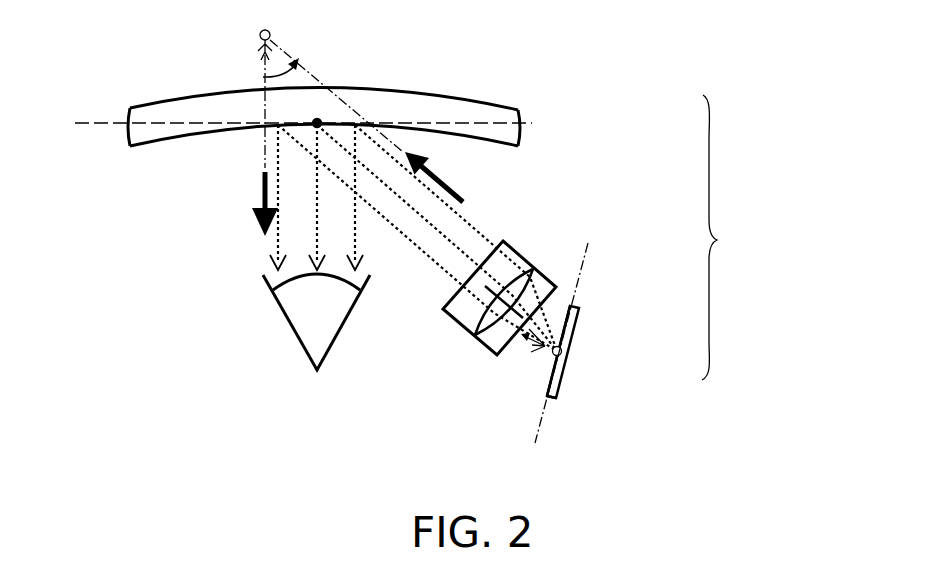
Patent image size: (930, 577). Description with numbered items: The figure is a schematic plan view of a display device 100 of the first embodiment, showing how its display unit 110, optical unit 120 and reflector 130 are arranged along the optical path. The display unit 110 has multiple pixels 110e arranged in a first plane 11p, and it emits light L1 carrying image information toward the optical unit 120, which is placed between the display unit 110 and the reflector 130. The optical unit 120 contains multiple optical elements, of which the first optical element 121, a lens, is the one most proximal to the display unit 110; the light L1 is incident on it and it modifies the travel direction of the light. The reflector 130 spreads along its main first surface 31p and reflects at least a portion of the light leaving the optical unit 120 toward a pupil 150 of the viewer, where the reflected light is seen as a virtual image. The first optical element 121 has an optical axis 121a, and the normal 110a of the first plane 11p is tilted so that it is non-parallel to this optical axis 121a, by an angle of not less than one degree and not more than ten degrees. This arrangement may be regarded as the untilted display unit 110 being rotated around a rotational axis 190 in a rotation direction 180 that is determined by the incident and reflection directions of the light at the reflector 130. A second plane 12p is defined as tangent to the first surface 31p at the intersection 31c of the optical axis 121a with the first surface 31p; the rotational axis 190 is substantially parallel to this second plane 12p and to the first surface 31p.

The display device 100 is at (740, 237).
The display unit 110 is at (579, 325).
The normal of the first plane 110a is at (542, 360).
The pixels 110e is at (566, 373).
The first plane 11p is at (545, 423).
The optical unit 120 is at (523, 258).
The first optical element 121 is at (453, 320).
The optical axis 121a is at (500, 288).
The reflector 130 is at (520, 113).
The second plane 12p is at (103, 120).
The pupil 150 is at (290, 327).
The rotation direction 180 is at (263, 70).
The rotational axis 190 is at (562, 352).
The intersection 31c is at (317, 119).
The first surface 31p is at (173, 135).
The light L1 is at (532, 345).